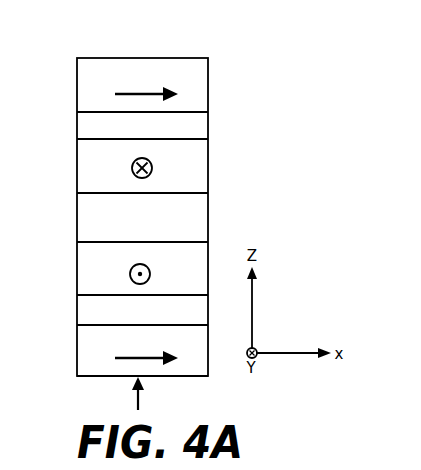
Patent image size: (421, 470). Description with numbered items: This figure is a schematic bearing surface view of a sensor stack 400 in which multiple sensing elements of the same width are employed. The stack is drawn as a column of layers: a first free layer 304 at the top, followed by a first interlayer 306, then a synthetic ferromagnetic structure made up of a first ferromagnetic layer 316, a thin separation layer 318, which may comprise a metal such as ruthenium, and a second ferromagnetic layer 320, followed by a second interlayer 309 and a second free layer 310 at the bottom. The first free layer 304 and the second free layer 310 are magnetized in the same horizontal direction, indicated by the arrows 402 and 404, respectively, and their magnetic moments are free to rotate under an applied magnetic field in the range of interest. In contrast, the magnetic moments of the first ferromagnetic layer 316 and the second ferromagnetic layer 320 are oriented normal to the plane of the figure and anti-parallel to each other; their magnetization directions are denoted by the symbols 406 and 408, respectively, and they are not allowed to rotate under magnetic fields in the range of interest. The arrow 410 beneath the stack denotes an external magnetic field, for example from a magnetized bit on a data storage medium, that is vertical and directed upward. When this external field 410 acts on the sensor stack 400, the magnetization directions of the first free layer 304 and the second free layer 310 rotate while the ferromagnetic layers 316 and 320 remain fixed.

The sensor stack 400 is at (287, 97).
The first free layer 304 is at (142, 86).
The first interlayer 306 is at (142, 127).
The first ferromagnetic layer 316 is at (142, 169).
The separation layer 318 is at (142, 220).
The second ferromagnetic layer 320 is at (142, 276).
The second interlayer 309 is at (142, 311).
The second free layer 310 is at (142, 352).
The magnetization direction of first free layer 402 is at (137, 92).
The magnetization direction of second free layer 404 is at (127, 360).
The magnetization direction of SAFL1 406 is at (132, 168).
The magnetization direction of SAFL2 408 is at (130, 274).
The external magnetic field 410 is at (141, 400).